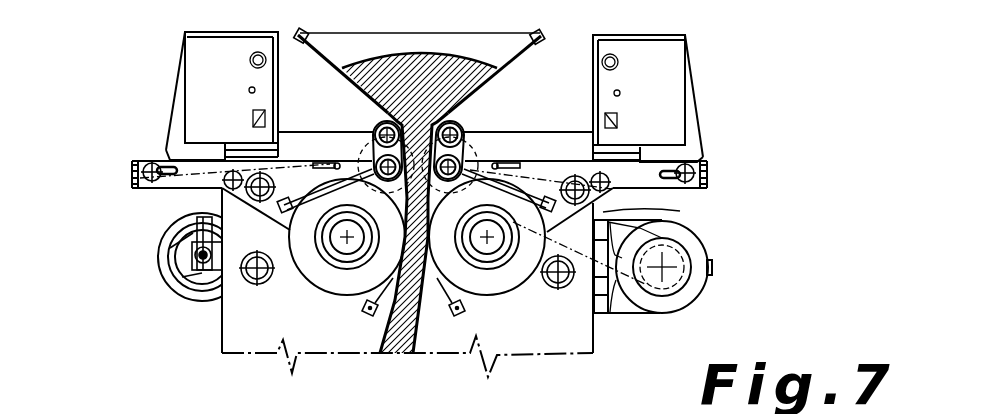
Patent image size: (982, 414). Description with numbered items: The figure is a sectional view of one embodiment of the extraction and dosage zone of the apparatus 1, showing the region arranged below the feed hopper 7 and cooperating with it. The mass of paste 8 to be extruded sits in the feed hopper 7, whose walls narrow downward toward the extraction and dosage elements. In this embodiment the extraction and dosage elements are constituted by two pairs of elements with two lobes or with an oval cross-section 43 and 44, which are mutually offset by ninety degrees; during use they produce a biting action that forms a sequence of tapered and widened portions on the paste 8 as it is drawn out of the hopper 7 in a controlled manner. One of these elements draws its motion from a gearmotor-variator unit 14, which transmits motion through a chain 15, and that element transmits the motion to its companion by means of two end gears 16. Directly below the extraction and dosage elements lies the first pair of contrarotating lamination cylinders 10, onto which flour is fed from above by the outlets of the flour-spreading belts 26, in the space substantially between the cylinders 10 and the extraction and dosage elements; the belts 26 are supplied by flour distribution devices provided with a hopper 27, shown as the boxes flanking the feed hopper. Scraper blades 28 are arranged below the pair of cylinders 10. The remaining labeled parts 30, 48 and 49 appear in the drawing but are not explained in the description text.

The apparatus 1 is at (185, 345).
The feed hopper 7 is at (535, 32).
The mass of paste 8 is at (432, 62).
The first pair of lamination cylinders 10 is at (300, 271).
The gearmotor-variator unit 14 is at (700, 287).
The chain 15 is at (603, 213).
The end gears 16 is at (358, 160).
The flour-spreading belts 26 is at (200, 160).
The hopper 27 is at (203, 58).
The scraper blades 28 is at (458, 314).
The adjusting dial 30 is at (160, 268).
The element with two lobes or oval cross-section 43 is at (380, 122).
The element with two lobes or oval cross-section 44 is at (381, 160).
The outlet channel 48 is at (341, 403).
The outlet channel 49 is at (475, 403).